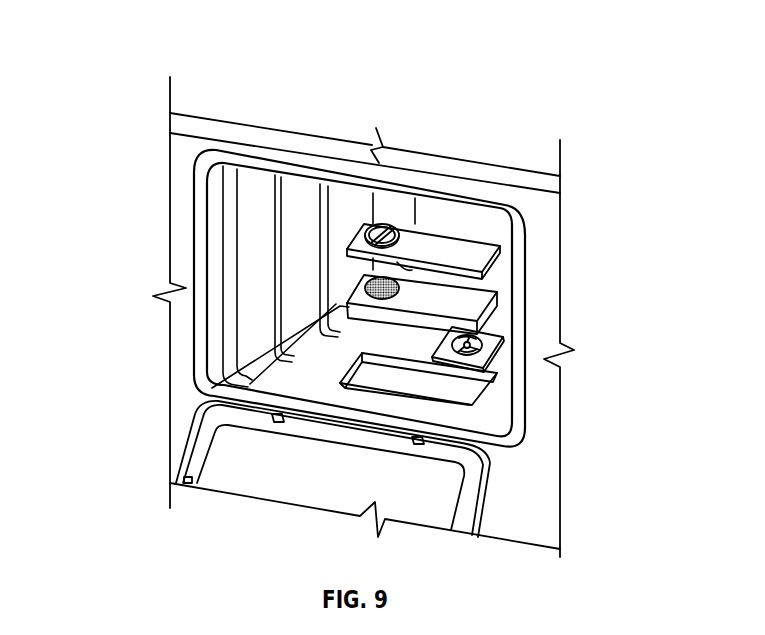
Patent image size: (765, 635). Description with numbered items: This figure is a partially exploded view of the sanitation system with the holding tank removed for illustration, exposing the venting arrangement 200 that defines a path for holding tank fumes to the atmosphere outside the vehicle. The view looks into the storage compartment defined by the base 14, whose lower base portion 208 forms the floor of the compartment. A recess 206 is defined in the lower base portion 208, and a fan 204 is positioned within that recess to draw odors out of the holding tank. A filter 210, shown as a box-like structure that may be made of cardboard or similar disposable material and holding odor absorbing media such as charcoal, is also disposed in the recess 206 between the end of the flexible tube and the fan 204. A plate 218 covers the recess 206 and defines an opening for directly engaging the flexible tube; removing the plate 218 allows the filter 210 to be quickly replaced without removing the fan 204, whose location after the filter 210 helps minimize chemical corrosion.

The venting arrangement 200 is at (136, 58).
The base 14 is at (204, 272).
The plate 218 is at (486, 250).
The filter 210 is at (478, 310).
The fan 204 is at (486, 353).
The recess 206 is at (497, 380).
The lower base portion 208 is at (397, 402).